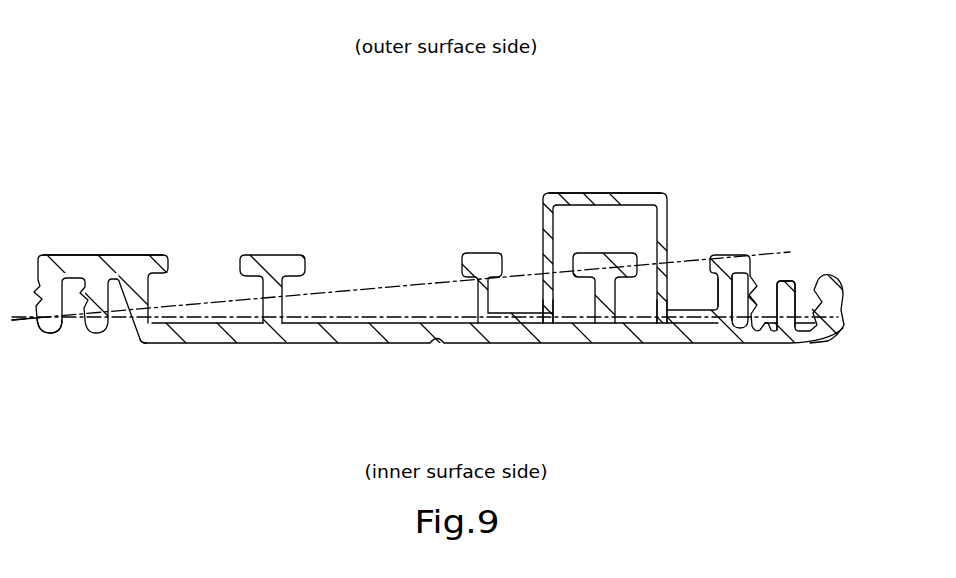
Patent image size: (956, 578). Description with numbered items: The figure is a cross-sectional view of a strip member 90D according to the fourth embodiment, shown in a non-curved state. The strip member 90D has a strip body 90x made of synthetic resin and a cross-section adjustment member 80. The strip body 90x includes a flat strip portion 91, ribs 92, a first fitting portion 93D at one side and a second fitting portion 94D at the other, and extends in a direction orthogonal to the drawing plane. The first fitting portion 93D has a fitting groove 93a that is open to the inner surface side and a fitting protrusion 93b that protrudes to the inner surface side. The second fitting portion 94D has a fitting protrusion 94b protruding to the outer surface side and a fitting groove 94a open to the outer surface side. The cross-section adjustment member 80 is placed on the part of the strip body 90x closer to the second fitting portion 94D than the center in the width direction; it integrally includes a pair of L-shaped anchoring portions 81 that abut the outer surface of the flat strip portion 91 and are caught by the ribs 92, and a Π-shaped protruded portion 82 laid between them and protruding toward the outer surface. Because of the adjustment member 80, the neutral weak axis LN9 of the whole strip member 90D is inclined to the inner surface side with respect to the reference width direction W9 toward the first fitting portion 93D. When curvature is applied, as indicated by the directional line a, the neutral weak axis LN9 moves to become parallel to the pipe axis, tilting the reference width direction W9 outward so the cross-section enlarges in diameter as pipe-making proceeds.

The strip member 90D is at (138, 147).
The first fitting portion 93D is at (50, 253).
The fitting protrusion 93b is at (107, 255).
The fitting groove 93a is at (63, 333).
The reference width direction W9 is at (168, 332).
The strip body 90x is at (225, 345).
The flat strip portion 91 is at (332, 345).
The anchoring portion 81 is at (518, 345).
The protruded portion 82 is at (565, 193).
The cross-section adjustment member 80 is at (617, 193).
The rib 92 is at (478, 253).
The fitting protrusion 94b is at (790, 281).
The fitting groove 94a is at (755, 330).
The second fitting portion 94D is at (793, 343).
The neutral weak axis LN9 is at (338, 291).
The directional line a is at (20, 291).